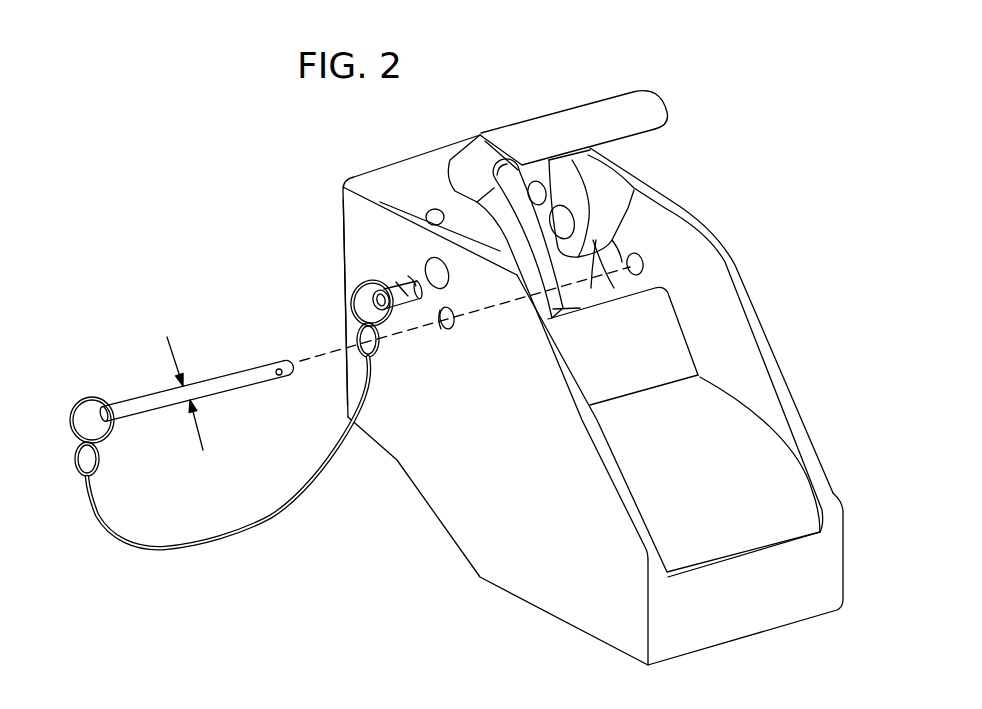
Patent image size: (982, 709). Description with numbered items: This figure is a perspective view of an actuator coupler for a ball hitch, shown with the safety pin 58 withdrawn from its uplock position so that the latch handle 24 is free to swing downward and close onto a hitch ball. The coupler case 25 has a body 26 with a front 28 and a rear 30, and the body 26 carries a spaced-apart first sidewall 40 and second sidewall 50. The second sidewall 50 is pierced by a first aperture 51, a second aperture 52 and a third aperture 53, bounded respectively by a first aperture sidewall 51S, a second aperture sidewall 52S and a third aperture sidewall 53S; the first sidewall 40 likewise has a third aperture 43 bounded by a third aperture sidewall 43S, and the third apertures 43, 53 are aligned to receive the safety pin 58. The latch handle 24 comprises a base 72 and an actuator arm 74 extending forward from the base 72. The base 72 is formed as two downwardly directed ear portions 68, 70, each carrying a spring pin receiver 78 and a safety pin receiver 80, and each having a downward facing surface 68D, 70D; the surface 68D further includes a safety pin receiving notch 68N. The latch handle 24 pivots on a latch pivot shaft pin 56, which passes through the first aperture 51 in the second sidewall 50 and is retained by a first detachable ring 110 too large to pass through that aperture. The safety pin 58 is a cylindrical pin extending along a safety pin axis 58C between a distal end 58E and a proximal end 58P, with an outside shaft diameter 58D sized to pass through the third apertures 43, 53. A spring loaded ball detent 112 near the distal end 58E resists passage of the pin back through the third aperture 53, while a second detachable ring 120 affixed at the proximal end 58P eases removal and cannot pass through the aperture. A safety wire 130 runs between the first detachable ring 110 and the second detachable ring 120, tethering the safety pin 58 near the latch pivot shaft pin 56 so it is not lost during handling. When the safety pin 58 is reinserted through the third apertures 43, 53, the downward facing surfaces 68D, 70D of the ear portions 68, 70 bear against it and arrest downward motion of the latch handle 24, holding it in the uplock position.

The latch handle 24 is at (597, 100).
The coupler case 25 is at (846, 495).
The body 26 is at (745, 440).
The front 28 is at (767, 630).
The rear 30 is at (345, 310).
The first sidewall 40 is at (752, 303).
The third aperture 43 is at (645, 266).
The third aperture sidewall 43S is at (620, 250).
The second sidewall 50 is at (611, 483).
The first aperture 51 is at (410, 278).
The first aperture sidewall 51S is at (395, 284).
The second aperture 52 is at (465, 223).
The second aperture sidewall 52S is at (421, 257).
The third aperture 53 is at (452, 326).
The third aperture sidewall 53S is at (443, 330).
The latch pivot shaft pin 56 is at (388, 311).
The safety pin 58 is at (130, 413).
The safety pin axis 58C is at (318, 358).
The outside shaft diameter 58D is at (179, 381).
The distal end 58E is at (282, 358).
The proximal end 58P is at (78, 422).
The ear portion 68 is at (600, 197).
The downward facing surface 68D is at (593, 240).
The safety pin receiving notch 68N is at (590, 305).
The ear portion 70 is at (418, 187).
The downward facing surface 70D is at (503, 253).
The base 72 is at (415, 189).
The actuator arm 74 is at (647, 137).
The spring pin receivers 78 is at (600, 193).
The safety pin receivers 80 is at (577, 223).
The first detachable ring 110 is at (353, 280).
The spring loaded ball detent 112 is at (279, 378).
The second detachable ring 120 is at (97, 398).
The safety wire 130 is at (110, 538).